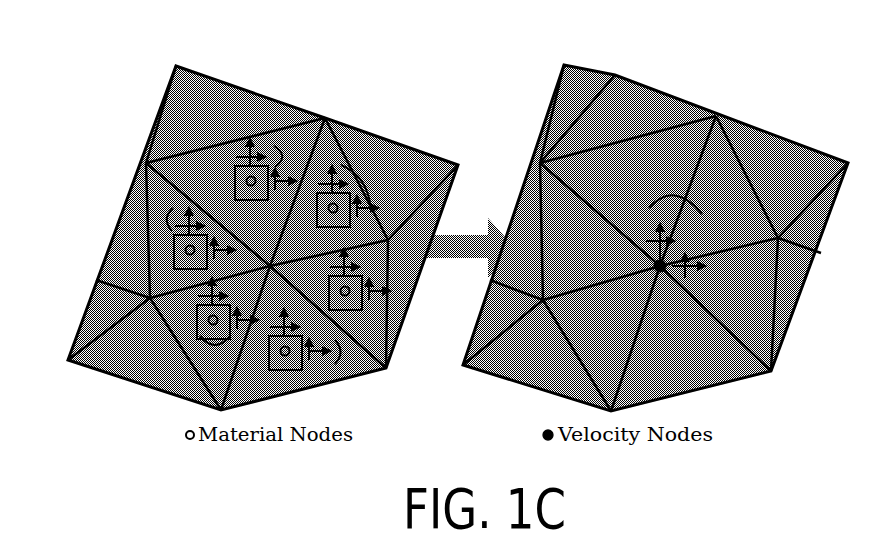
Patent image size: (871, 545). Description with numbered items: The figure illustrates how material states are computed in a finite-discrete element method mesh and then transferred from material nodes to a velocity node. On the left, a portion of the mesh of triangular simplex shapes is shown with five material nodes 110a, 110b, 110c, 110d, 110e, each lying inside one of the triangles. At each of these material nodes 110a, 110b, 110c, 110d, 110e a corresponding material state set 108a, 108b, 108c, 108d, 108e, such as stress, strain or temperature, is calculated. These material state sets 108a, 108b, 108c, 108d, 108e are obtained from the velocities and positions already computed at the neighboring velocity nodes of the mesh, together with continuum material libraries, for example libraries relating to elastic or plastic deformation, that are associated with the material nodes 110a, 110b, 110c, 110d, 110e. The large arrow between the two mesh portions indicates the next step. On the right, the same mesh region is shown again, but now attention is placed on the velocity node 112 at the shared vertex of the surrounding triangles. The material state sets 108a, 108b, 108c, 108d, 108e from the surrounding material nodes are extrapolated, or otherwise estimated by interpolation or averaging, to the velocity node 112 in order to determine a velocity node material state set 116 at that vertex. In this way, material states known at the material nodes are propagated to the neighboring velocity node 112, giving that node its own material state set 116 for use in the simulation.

The material state set 108a is at (276, 146).
The material state set 108b is at (158, 209).
The material state set 108c is at (203, 341).
The material state set 108d is at (332, 349).
The material state set 108e is at (348, 164).
The material node 110a is at (240, 171).
The material node 110b is at (178, 242).
The material node 110c is at (200, 314).
The material node 110d is at (277, 348).
The material node 110e is at (326, 196).
The velocity node 112 is at (652, 258).
The velocity node material state set 116 is at (711, 262).